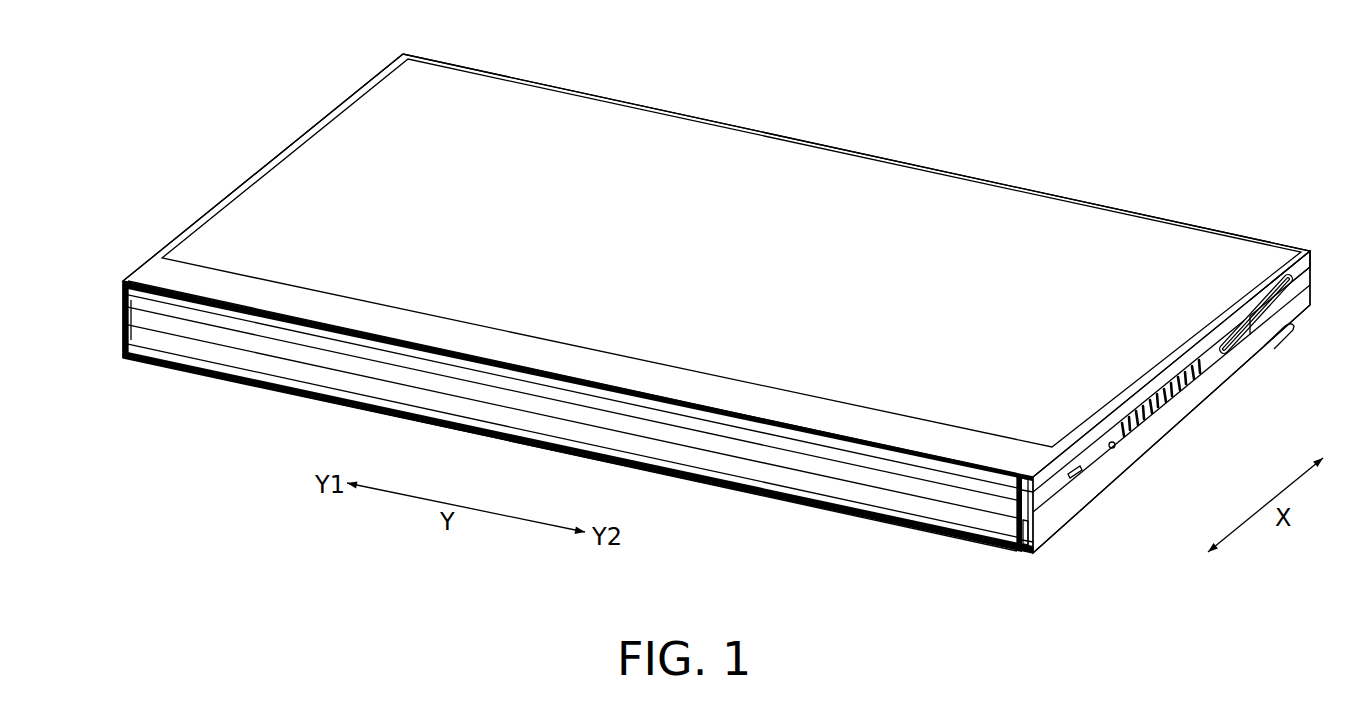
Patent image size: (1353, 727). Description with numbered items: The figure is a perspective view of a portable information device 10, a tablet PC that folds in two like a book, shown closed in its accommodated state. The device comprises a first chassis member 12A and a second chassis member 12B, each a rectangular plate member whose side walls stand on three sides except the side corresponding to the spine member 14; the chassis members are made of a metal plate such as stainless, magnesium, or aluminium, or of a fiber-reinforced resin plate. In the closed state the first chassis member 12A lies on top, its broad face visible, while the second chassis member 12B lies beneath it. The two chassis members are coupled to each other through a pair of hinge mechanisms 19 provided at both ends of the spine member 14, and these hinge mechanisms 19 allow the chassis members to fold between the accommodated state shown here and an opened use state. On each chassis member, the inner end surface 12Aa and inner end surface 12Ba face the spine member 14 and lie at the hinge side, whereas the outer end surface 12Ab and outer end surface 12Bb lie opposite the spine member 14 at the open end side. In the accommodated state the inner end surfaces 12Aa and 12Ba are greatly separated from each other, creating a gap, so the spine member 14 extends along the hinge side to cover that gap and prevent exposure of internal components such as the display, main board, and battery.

The portable information device 10 is at (212, 86).
The first chassis member 12A is at (849, 182).
The second chassis member 12B is at (1168, 440).
The inner end surface of first chassis member 12Aa is at (1031, 497).
The outer end surface of first chassis member 12Ab is at (1312, 268).
The inner end surface of second chassis member 12Ba is at (1023, 552).
The outer end surface of second chassis member 12Bb is at (1312, 292).
The spine member 14 is at (488, 405).
The hinge mechanism 19 is at (124, 312).